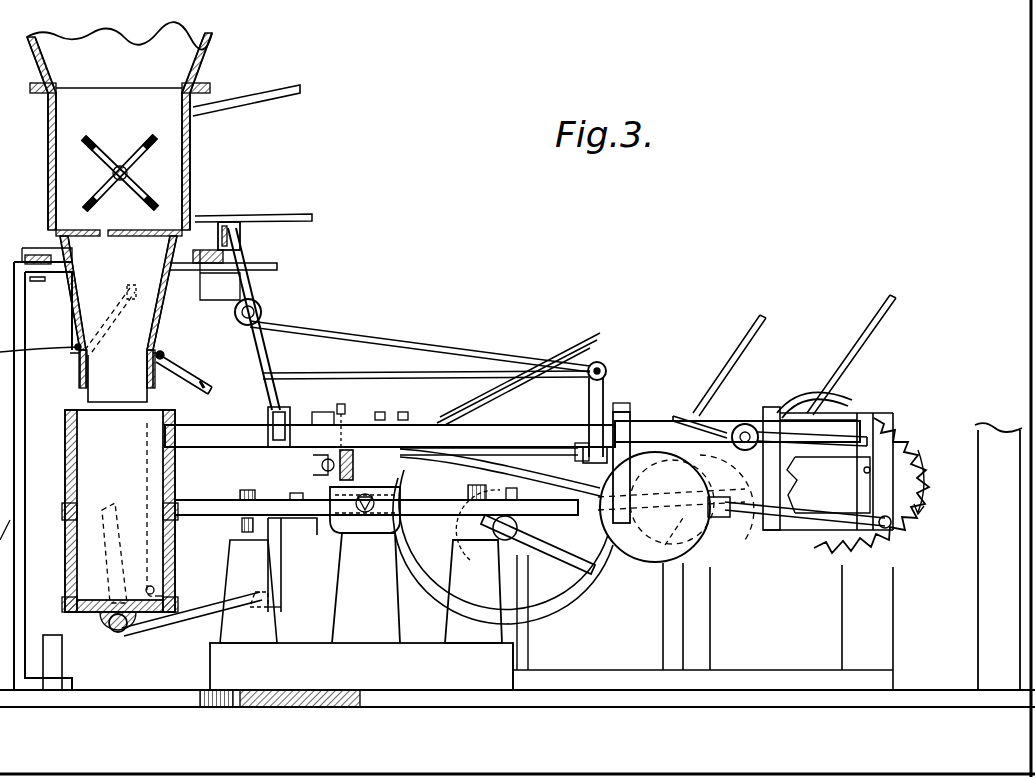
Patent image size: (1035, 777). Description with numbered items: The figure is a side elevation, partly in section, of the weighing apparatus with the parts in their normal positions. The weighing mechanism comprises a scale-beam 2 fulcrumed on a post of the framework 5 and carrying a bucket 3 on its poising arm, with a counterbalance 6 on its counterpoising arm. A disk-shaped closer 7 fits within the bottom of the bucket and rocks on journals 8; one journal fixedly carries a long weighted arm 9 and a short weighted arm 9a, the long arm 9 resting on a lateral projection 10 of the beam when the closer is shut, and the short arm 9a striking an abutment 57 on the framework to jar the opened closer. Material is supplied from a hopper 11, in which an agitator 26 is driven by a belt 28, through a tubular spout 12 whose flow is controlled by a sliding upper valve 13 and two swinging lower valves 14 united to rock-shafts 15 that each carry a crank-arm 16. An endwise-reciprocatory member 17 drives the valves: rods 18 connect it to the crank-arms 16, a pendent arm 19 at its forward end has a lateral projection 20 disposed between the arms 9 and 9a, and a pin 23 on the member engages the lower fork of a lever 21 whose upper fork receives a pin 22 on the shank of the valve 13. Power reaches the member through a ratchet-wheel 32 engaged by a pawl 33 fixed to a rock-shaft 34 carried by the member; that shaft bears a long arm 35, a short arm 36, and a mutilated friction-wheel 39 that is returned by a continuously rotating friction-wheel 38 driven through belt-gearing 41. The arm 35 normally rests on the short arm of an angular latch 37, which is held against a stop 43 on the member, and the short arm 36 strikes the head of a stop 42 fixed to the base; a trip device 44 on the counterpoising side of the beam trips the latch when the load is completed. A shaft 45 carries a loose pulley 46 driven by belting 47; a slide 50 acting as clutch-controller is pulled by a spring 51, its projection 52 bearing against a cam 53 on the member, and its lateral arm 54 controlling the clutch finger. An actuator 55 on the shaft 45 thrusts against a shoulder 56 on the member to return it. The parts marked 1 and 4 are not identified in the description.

The frame 1 is at (517, 477).
The scale-beam 2 is at (200, 513).
The bucket 3 is at (120, 511).
The frame side 4 is at (5, 525).
The framework 5 is at (361, 588).
The counterbalance 6 is at (681, 566).
The closer 7 is at (98, 618).
The journals 8 is at (112, 632).
The long weighted arm 9 is at (195, 619).
The short weighted arm 9a is at (110, 563).
The lateral projection 10 is at (265, 618).
The hopper 11 is at (193, 172).
The tubular spout 12 is at (72, 311).
The upper valve 13 is at (118, 303).
The lower valves 14 is at (80, 372).
The rock-shafts 15 is at (163, 354).
The crank-arm 16 is at (120, 300).
The endwise-reciprocatory power-actuated member 17 is at (390, 438).
The rods 18 is at (388, 344).
The pendent arm 19 is at (150, 550).
The lateral projection 20 is at (170, 580).
The lever 21 is at (268, 352).
The pin 22 is at (240, 246).
The pin 23 is at (281, 448).
The agitator 26 is at (119, 172).
The belt 28 is at (246, 91).
The ratchet-wheel 32 is at (905, 430).
The pawl 33 is at (818, 392).
The rock-shaft 34 is at (745, 437).
The arm 35 is at (830, 437).
The arm 36 is at (688, 417).
The angular latch 37 is at (845, 522).
The friction-wheel 38 is at (667, 542).
The mutilated friction-wheel 39 is at (742, 424).
The belt-gearing 41 is at (737, 365).
The stop 42 is at (624, 403).
The stop 43 is at (864, 471).
The trip device 44 is at (676, 507).
The shaft 45 is at (478, 548).
The pulley 46 is at (503, 547).
The belting 47 is at (578, 330).
The slide 50 is at (338, 472).
The coiled pull-spring 51 is at (318, 430).
The projection 52 is at (337, 414).
The cam 53 is at (392, 400).
The lateral arm 54 is at (517, 470).
The actuator 55 is at (525, 532).
The shoulder 56 is at (565, 447).
The abutment 57 is at (50, 650).